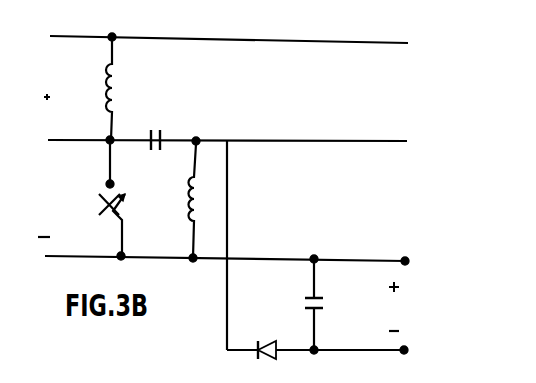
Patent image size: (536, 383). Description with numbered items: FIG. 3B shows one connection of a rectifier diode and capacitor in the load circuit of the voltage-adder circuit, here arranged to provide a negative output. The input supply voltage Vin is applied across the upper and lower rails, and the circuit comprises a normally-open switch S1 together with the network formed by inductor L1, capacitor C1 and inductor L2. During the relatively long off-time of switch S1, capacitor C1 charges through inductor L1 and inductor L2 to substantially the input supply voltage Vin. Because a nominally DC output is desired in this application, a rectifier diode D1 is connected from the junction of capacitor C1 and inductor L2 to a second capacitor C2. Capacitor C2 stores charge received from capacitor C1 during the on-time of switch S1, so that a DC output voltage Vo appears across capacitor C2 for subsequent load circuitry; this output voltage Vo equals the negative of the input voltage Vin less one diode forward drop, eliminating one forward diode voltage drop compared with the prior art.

The inductor L1 is at (91, 90).
The capacitor C1 is at (160, 125).
The switch S1 is at (92, 200).
The inductor L2 is at (175, 201).
The second capacitor C2 is at (331, 306).
The rectifier diode D1 is at (317, 334).
The input supply voltage Vin is at (42, 165).
The output voltage Vo is at (400, 306).